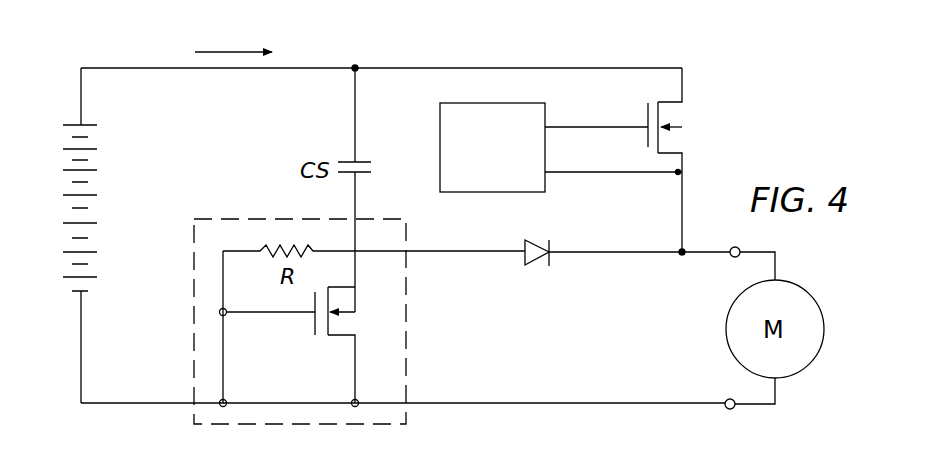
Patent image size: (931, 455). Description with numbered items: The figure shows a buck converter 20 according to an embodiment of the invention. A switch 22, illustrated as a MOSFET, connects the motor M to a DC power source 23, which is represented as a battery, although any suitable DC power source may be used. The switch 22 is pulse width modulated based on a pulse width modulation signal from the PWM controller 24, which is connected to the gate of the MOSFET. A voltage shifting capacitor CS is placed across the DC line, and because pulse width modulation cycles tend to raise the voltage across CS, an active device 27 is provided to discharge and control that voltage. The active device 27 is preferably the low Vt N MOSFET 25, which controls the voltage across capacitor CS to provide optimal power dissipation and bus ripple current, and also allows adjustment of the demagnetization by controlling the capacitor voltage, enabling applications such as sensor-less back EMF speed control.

The buck converter 20 is at (113, 56).
The switch 22 is at (690, 121).
The DC power source 23 is at (60, 189).
The PWM controller 24 is at (440, 146).
The low Vt N MOSFET 25 is at (365, 310).
The active device 27 is at (200, 213).